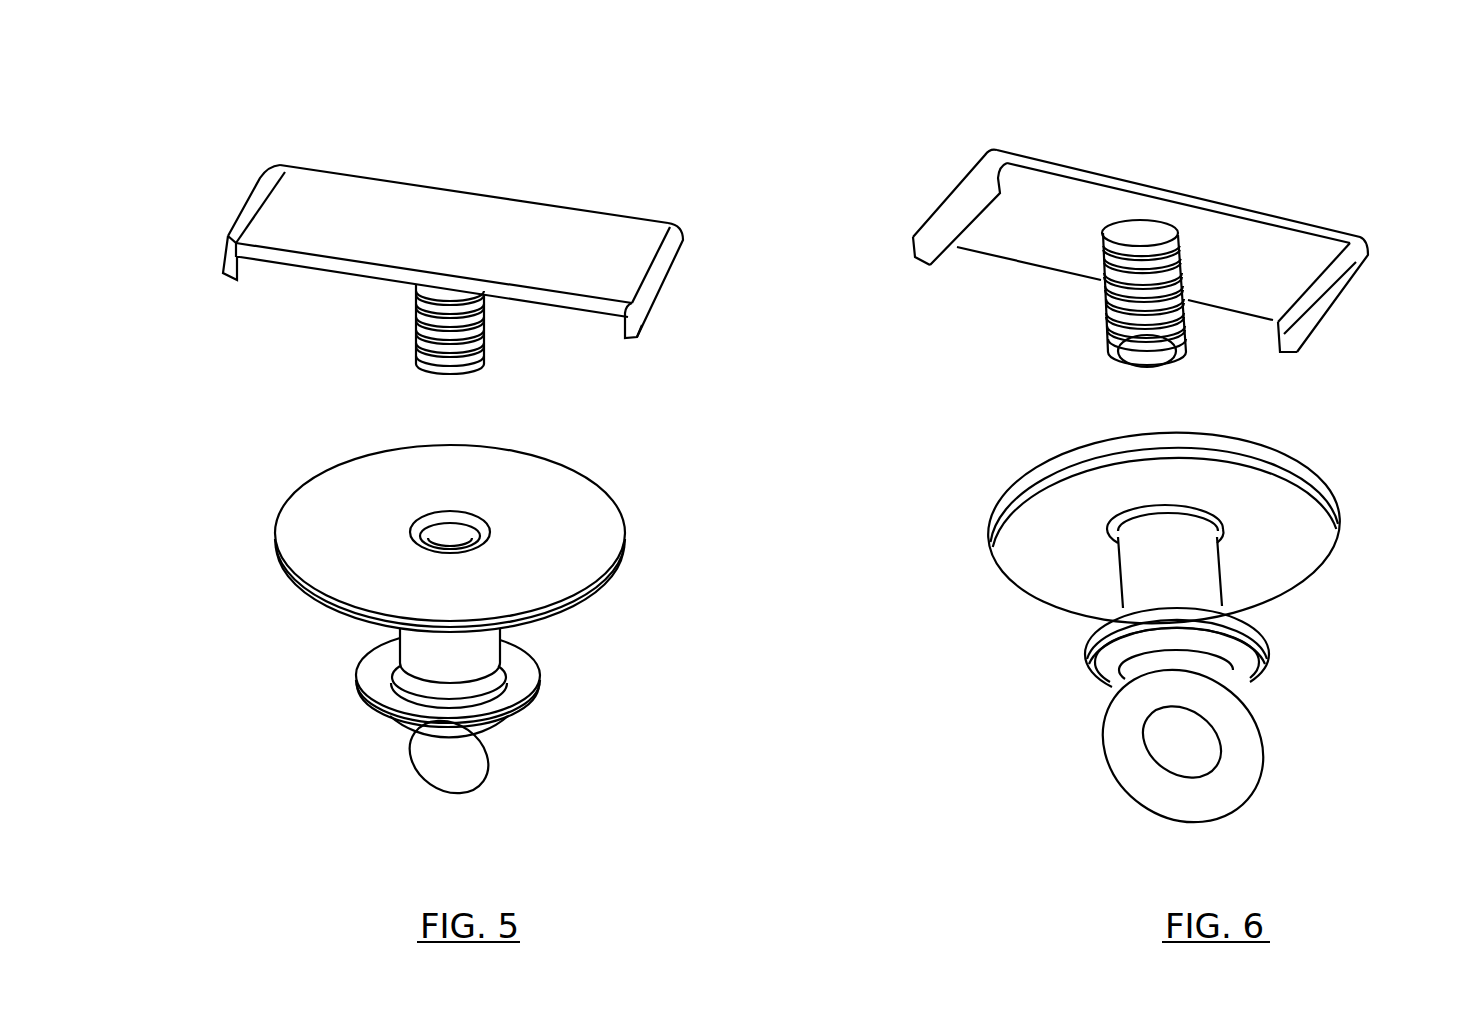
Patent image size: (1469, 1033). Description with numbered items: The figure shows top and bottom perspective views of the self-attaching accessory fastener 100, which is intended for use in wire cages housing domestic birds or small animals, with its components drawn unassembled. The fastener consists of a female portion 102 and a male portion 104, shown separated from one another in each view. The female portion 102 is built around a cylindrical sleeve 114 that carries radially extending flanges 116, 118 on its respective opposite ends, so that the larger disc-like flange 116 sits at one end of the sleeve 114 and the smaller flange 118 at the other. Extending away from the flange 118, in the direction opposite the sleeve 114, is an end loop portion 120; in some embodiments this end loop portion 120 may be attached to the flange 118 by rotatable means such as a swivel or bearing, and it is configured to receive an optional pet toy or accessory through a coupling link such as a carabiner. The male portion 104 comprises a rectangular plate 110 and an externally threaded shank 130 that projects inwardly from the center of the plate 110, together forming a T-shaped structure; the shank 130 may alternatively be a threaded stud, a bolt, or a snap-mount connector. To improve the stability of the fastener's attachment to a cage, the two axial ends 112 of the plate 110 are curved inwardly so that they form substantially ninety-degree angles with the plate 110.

In FIG. 5, the self-attaching accessory fastener 100 is at (470, 418).
In FIG. 6, the self-attaching accessory fastener 100 is at (1106, 441).
In FIG. 5, the female portion 102 is at (462, 626).
In FIG. 6, the female portion 102 is at (1129, 638).
In FIG. 5, the male portion 104 is at (502, 300).
In FIG. 6, the male portion 104 is at (1133, 284).
In FIG. 5, the rectangular plate 110 is at (572, 307).
In FIG. 6, the rectangular plate 110 is at (1031, 248).
In FIG. 5, the axial ends 112 is at (680, 288).
In FIG. 6, the axial ends 112 is at (918, 264).
In FIG. 5, the cylindrical sleeve 114 is at (507, 632).
In FIG. 6, the cylindrical sleeve 114 is at (1118, 596).
In FIG. 5, the flange 116 is at (635, 524).
In FIG. 6, the flange 116 is at (990, 512).
In FIG. 5, the flange 118 is at (544, 691).
In FIG. 6, the flange 118 is at (1088, 667).
In FIG. 5, the end loop portion 120 is at (535, 772).
In FIG. 6, the end loop portion 120 is at (1105, 744).
In FIG. 6, the externally threaded shank 130 is at (1105, 328).